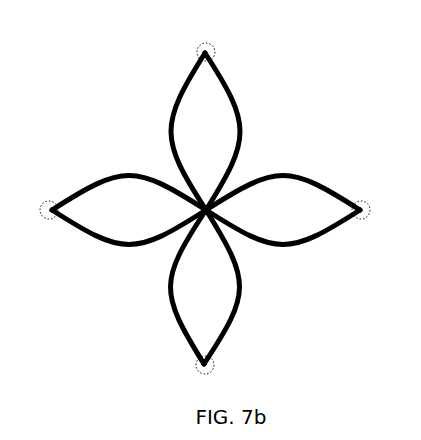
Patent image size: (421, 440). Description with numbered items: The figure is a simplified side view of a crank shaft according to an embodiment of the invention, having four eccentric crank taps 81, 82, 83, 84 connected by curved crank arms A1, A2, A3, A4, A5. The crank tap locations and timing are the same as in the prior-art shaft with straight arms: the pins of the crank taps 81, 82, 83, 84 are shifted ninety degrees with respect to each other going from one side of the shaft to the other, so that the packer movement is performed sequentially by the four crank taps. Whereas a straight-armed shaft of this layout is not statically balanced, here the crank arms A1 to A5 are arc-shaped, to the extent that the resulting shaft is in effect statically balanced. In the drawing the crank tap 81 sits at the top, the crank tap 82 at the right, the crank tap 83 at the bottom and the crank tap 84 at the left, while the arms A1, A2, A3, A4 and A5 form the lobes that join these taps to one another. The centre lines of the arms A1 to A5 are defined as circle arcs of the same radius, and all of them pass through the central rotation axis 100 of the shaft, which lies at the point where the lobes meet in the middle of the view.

The central rotation axis 100 is at (206, 208).
The crank tap 81 is at (205, 43).
The crank tap 82 is at (373, 211).
The crank tap 83 is at (201, 375).
The crank tap 84 is at (36, 209).
The crank arm A1 is at (240, 130).
The crank arm A2 is at (173, 120).
The crank arm A3 is at (300, 175).
The crank arm A4 is at (243, 292).
The crank arm A5 is at (108, 242).